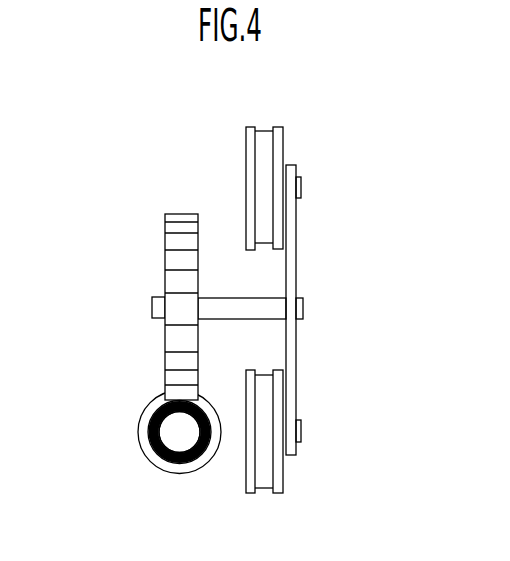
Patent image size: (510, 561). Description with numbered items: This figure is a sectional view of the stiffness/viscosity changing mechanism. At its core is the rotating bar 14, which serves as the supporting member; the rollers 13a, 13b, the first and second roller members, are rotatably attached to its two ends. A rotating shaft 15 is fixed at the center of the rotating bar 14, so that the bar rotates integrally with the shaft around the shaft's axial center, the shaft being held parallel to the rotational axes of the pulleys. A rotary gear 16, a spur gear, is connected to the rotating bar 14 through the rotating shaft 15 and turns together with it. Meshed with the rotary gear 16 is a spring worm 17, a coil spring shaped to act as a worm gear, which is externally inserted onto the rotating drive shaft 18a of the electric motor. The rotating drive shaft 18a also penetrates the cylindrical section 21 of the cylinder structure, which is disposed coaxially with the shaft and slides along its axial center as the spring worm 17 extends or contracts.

The roller 13a is at (283, 142).
The roller 13b is at (285, 477).
The rotating bar 14 is at (298, 263).
The rotating shaft 15 is at (215, 298).
The rotary gear 16 is at (178, 212).
The spring worm 17 is at (163, 462).
The rotating drive shaft 18a is at (187, 432).
The cylindrical section 21 is at (147, 405).